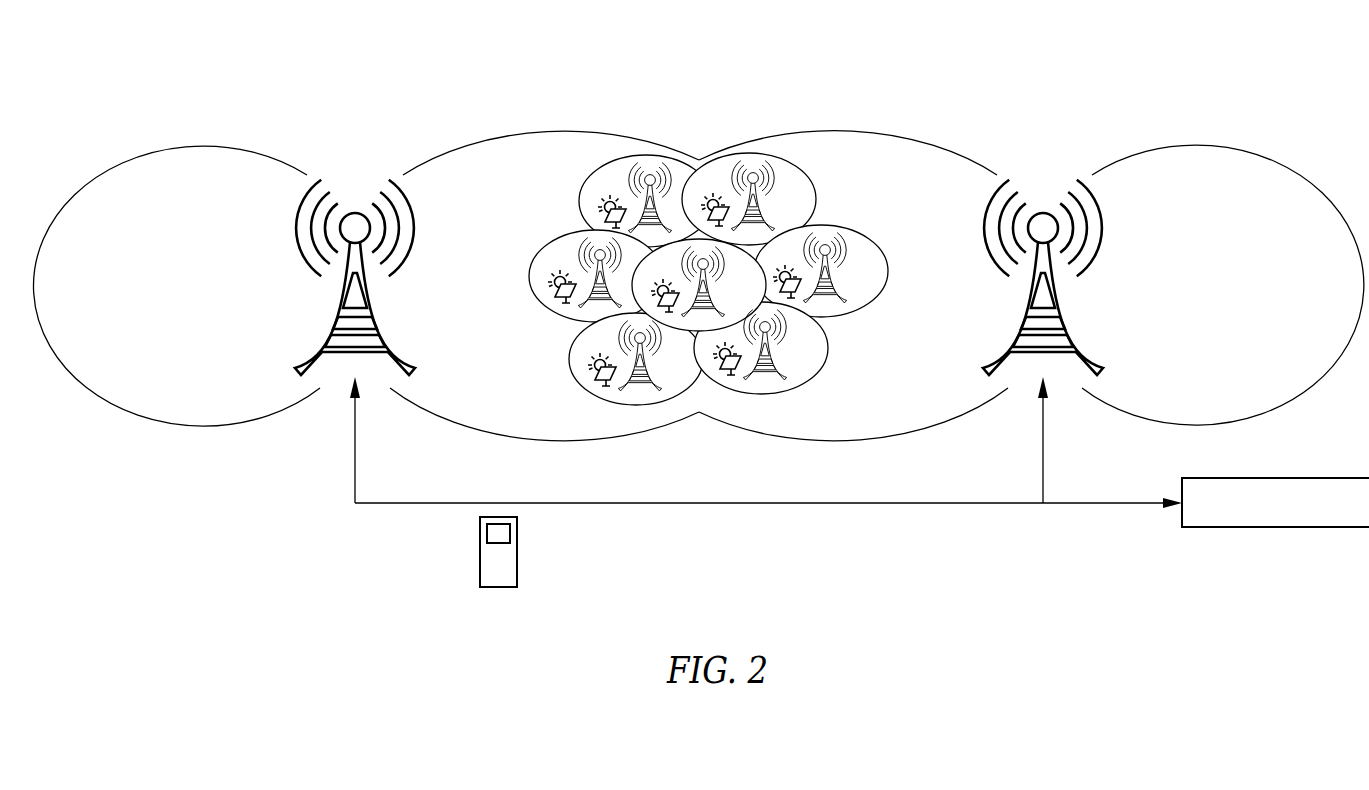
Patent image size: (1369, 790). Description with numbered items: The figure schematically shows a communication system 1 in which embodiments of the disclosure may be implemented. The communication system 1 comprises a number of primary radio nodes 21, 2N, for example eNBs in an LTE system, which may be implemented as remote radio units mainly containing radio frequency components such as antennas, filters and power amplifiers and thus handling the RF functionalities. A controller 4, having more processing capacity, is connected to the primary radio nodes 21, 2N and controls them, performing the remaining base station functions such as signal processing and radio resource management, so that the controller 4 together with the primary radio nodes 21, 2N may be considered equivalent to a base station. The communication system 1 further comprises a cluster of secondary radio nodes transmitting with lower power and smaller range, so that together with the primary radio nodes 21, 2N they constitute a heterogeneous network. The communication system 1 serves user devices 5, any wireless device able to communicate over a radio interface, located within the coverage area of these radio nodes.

The communication system 1 is at (128, 100).
The primary radio node 21 is at (335, 353).
The primary radio node 2N is at (1063, 353).
The controller 4 is at (1333, 478).
The user device 5 is at (488, 565).